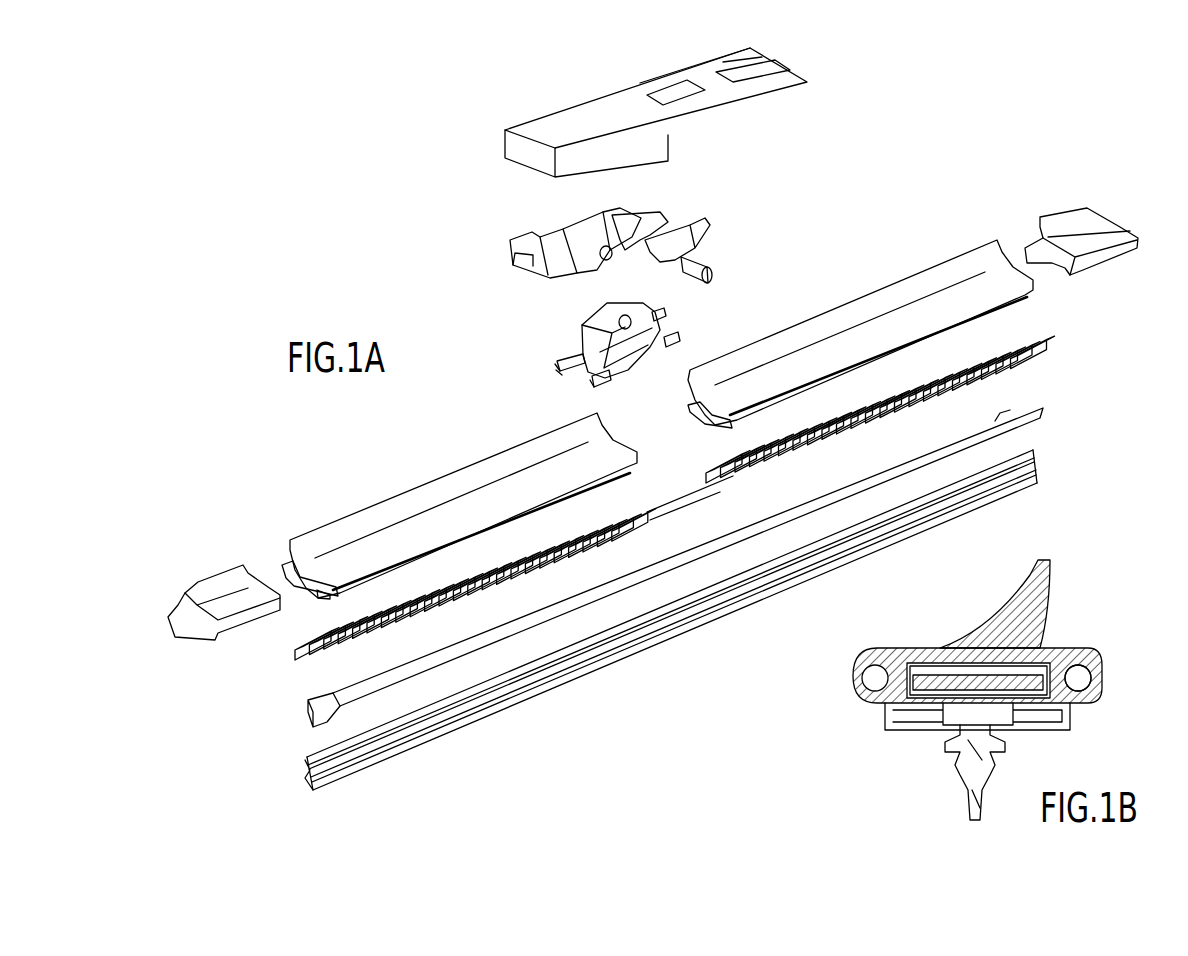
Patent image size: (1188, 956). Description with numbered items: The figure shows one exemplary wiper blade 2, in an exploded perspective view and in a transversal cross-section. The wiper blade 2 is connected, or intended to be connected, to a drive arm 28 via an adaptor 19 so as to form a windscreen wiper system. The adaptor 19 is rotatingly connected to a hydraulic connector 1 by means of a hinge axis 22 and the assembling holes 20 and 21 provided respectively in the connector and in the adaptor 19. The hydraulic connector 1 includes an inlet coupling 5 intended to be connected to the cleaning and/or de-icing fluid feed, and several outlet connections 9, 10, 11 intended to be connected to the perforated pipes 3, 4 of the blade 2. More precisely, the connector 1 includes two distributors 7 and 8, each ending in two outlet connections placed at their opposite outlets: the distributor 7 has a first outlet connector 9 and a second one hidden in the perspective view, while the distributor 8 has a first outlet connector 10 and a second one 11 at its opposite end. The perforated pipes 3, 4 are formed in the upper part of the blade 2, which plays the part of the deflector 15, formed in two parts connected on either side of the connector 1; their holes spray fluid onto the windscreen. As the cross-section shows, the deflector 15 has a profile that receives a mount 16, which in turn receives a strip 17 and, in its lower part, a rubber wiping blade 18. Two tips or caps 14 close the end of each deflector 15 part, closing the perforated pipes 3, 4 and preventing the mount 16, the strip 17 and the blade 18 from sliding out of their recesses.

In FIG. 1A, the hydraulic connector 1 is at (680, 310).
In FIG. 1A, the wiper blade 2 is at (232, 757).
In FIG. 1B, the wiper blade 2 is at (852, 772).
In FIG. 1A, the perforated pipe 3 is at (280, 572).
In FIG. 1B, the perforated pipe 3 is at (872, 678).
In FIG. 1A, the perforated pipe 4 is at (324, 600).
In FIG. 1B, the perforated pipe 4 is at (1082, 678).
In FIG. 1A, the inlet coupling 5 is at (660, 309).
In FIG. 1A, the distributor 7 is at (562, 372).
In FIG. 1A, the distributor 8 is at (592, 385).
In FIG. 1A, the first outlet connector 9 is at (562, 360).
In FIG. 1A, the first outlet connector 10 is at (614, 374).
In FIG. 1A, the second outlet connector 11 is at (680, 338).
In FIG. 1A, the tip or cap 14 is at (1068, 218).
In FIG. 1A, the deflector 15 is at (818, 322).
In FIG. 1B, the deflector 15 is at (1010, 628).
In FIG. 1A, the mount 16 is at (1032, 345).
In FIG. 1B, the mount 16 is at (956, 672).
In FIG. 1A, the strip 17 is at (1035, 408).
In FIG. 1B, the strip 17 is at (918, 664).
In FIG. 1A, the rubber wiping blade 18 is at (1038, 450).
In FIG. 1B, the rubber wiping blade 18 is at (968, 798).
In FIG. 1A, the adaptor 19 is at (568, 222).
In FIG. 1A, the assembling hole 20 is at (634, 312).
In FIG. 1A, the assembling hole 21 is at (612, 243).
In FIG. 1A, the hinge axis 22 is at (692, 263).
In FIG. 1A, the drive arm 28 is at (568, 108).